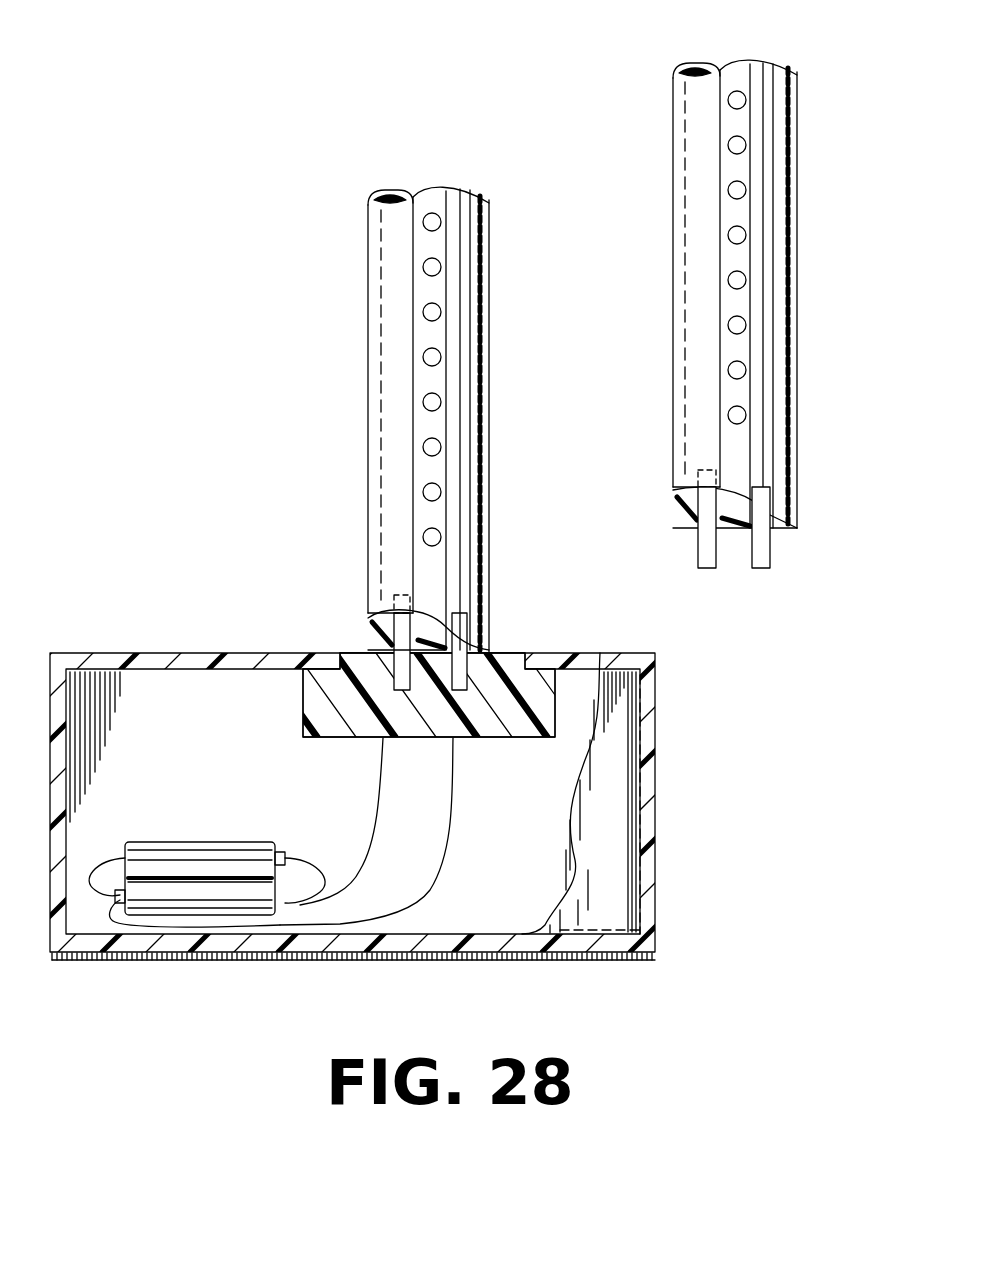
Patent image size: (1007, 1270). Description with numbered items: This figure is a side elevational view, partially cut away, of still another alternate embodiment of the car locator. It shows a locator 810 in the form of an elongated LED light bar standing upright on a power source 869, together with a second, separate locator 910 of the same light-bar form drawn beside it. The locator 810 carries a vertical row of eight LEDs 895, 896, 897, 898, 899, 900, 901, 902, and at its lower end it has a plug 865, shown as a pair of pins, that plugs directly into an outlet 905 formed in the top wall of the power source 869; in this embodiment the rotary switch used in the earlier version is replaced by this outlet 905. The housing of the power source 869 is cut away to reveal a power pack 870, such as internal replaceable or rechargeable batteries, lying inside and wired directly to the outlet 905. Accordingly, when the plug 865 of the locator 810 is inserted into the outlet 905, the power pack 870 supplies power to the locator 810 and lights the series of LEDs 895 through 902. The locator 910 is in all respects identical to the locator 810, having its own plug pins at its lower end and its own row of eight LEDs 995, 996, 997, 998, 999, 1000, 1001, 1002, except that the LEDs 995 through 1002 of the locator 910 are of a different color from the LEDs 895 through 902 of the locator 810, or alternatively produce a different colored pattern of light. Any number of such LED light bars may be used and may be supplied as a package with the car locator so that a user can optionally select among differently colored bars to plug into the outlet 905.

The locator 810 is at (346, 296).
The plug 865 is at (392, 640).
The power source 869 is at (658, 781).
The power pack 870 is at (217, 898).
The LED 895 is at (441, 222).
The LED 896 is at (441, 267).
The LED 897 is at (441, 312).
The LED 898 is at (441, 357).
The LED 899 is at (441, 402).
The LED 900 is at (441, 447).
The LED 901 is at (441, 492).
The LED 902 is at (441, 537).
The outlet 905 is at (320, 717).
The locator 910 is at (666, 139).
The LED 995 is at (746, 100).
The LED 996 is at (746, 145).
The LED 997 is at (746, 190).
The LED 998 is at (746, 235).
The LED 999 is at (746, 280).
The LED 1000 is at (746, 325).
The LED 1001 is at (746, 370).
The LED 1002 is at (746, 415).